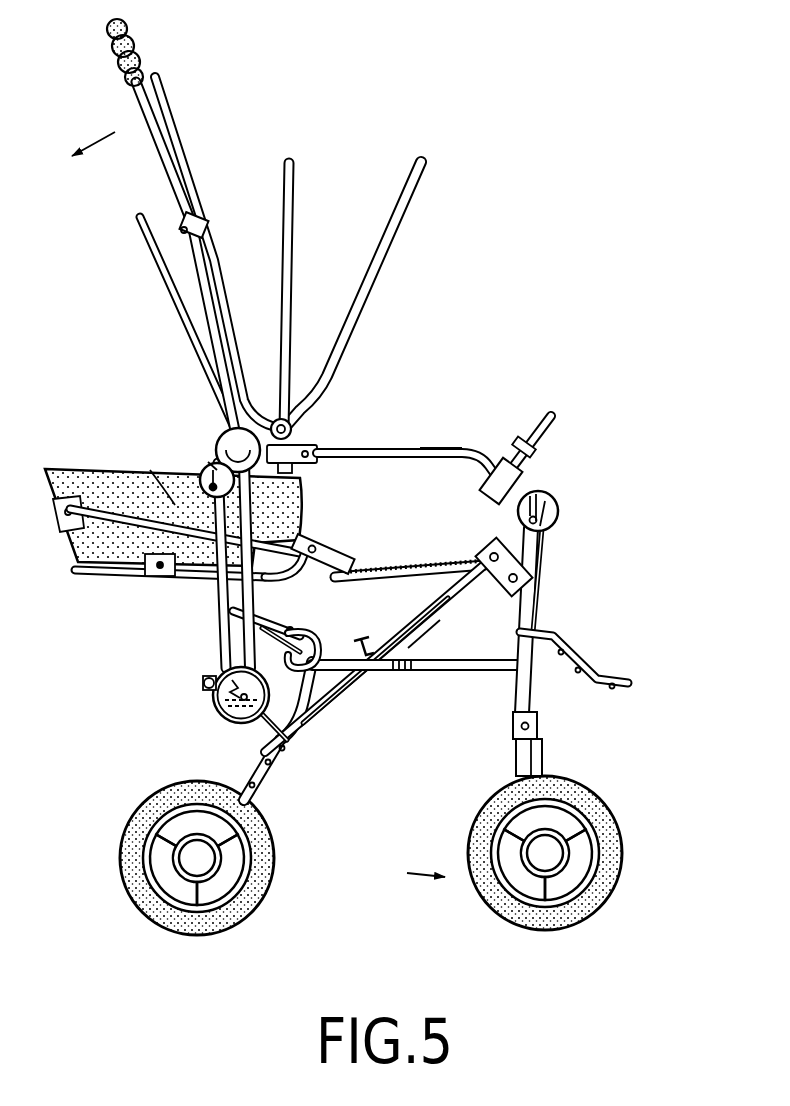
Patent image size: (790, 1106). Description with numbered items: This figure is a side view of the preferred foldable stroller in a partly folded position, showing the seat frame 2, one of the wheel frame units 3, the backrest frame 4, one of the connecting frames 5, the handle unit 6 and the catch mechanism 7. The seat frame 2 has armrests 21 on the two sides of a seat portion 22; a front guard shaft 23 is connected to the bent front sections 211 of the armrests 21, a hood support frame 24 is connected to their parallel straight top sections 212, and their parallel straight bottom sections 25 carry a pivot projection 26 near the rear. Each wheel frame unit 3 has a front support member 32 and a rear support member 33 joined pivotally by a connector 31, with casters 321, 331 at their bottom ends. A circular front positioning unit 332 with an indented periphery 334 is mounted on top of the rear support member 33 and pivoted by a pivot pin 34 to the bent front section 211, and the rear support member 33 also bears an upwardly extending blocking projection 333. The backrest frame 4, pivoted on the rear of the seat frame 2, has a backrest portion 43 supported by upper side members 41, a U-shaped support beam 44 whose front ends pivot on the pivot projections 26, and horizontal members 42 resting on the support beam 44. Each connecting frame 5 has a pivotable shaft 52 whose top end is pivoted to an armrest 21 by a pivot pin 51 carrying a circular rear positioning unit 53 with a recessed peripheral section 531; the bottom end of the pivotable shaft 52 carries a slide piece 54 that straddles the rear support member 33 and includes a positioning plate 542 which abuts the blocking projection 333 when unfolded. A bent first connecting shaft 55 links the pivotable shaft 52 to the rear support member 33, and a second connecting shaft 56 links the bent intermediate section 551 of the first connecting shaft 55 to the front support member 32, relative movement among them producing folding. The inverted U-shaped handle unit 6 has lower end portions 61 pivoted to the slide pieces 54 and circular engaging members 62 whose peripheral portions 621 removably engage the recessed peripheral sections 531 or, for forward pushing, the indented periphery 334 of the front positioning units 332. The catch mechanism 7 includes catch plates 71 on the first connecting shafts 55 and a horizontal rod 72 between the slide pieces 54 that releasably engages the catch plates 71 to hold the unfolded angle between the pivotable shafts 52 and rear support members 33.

The seat frame 2 is at (398, 563).
The armrests 21 is at (380, 449).
The bent front sections 211 is at (473, 450).
The parallel straight top sections 212 is at (430, 449).
The seat portion 22 is at (454, 572).
The front guard shaft 23 is at (549, 436).
The hood support frame 24 is at (384, 273).
The parallel straight bottom sections 25 is at (430, 572).
The pivot projection 26 is at (302, 535).
The wheel frame units 3 is at (546, 604).
The connector 31 is at (522, 573).
The front support member 32 is at (532, 690).
The caster 321 is at (614, 853).
The rear support member 33 is at (366, 672).
The caster 331 is at (278, 868).
The front positioning unit 332 is at (554, 501).
The blocking projection 333 is at (408, 640).
The indented periphery 334 is at (561, 526).
The pivot pin 34 is at (550, 534).
The backrest frame 4 is at (126, 592).
The upper side members 41 is at (105, 510).
The horizontal members 42 is at (163, 580).
The backrest portion 43 is at (143, 500).
The U-shaped support beam 44 is at (104, 581).
The connecting frames 5 is at (196, 698).
The pivot pin 51 is at (205, 457).
The pivotable shaft 52 is at (216, 645).
The rear positioning unit 53 is at (204, 480).
The recessed peripheral section 531 is at (215, 449).
The slide piece 54 is at (241, 723).
The positioning plate 542 is at (277, 777).
The first connecting shaft 55 is at (316, 693).
The bent intermediate section 551 is at (326, 638).
The second connecting shaft 56 is at (449, 671).
The handle unit 6 is at (223, 249).
The lower end portions 61 is at (266, 618).
The engaging members 62 is at (252, 385).
The peripheral portion 621 is at (291, 377).
The catch mechanism 7 is at (293, 668).
The catch plates 71 is at (298, 638).
The horizontal rod 72 is at (217, 722).